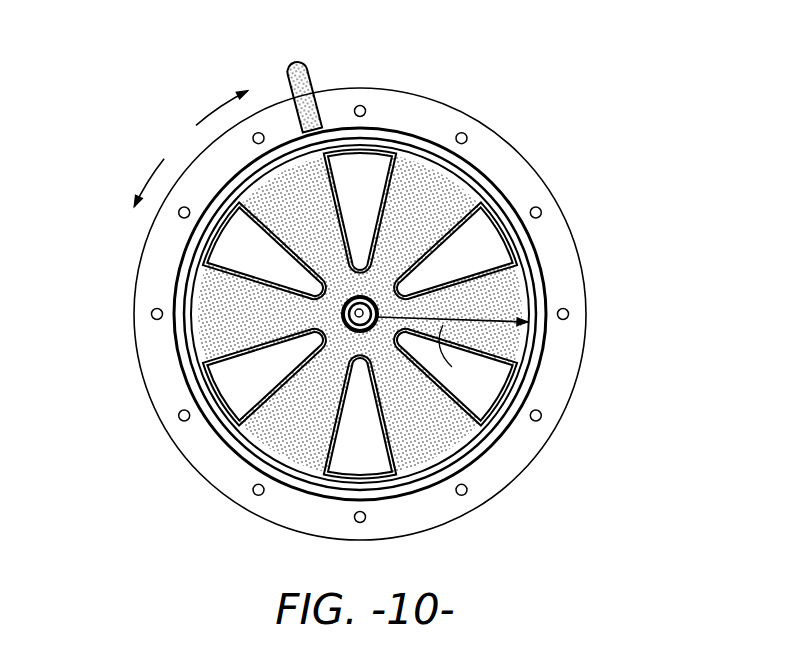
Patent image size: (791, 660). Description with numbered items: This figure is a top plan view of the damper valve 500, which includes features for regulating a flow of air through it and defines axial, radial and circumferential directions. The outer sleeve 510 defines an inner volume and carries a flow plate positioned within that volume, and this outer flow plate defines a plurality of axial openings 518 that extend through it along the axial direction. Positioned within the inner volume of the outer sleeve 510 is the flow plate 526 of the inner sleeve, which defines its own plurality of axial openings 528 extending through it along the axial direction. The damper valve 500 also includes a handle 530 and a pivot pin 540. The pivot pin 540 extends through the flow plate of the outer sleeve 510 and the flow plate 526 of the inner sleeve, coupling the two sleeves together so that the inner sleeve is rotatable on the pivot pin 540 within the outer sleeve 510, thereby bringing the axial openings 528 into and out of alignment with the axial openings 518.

The damper valve 500 is at (365, 286).
The outer sleeve 510 is at (555, 377).
The axial openings 518 is at (237, 253).
The flow plate 526 is at (540, 334).
The axial openings 528 is at (213, 336).
The handle 530 is at (288, 75).
The pivot pin 540 is at (343, 213).